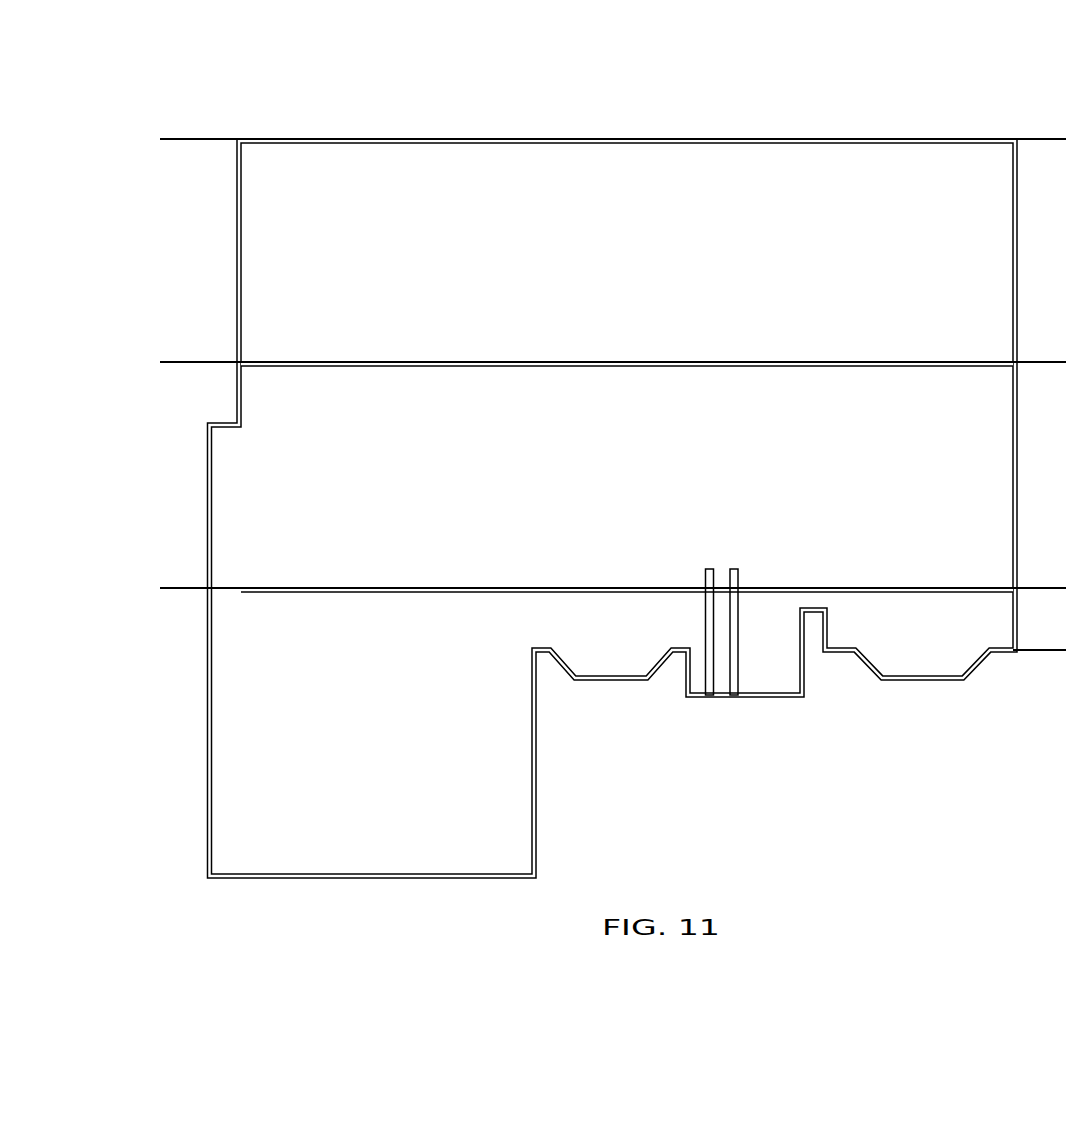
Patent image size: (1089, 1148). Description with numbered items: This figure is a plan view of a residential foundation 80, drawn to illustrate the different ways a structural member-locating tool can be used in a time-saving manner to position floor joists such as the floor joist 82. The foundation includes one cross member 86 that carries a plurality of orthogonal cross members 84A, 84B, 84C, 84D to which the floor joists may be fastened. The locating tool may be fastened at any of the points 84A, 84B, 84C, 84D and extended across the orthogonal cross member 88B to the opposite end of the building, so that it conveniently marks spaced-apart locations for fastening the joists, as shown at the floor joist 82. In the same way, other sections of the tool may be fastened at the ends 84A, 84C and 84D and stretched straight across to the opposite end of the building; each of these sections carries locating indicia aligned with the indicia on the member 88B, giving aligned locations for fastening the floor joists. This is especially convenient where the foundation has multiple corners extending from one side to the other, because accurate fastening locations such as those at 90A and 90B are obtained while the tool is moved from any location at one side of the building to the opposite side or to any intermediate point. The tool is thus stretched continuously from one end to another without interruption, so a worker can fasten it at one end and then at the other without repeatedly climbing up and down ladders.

The residential foundation 80 is at (776, 227).
The floor joist 82 is at (721, 643).
The orthogonal cross member 84A is at (1017, 652).
The orthogonal cross member 84B is at (1017, 586).
The orthogonal cross member 84C is at (1017, 362).
The orthogonal cross member 84D is at (1017, 139).
The cross member 86 is at (240, 139).
The orthogonal cross member 88B is at (209, 587).
The fastening location 90A is at (708, 688).
The fastening location 90B is at (733, 693).